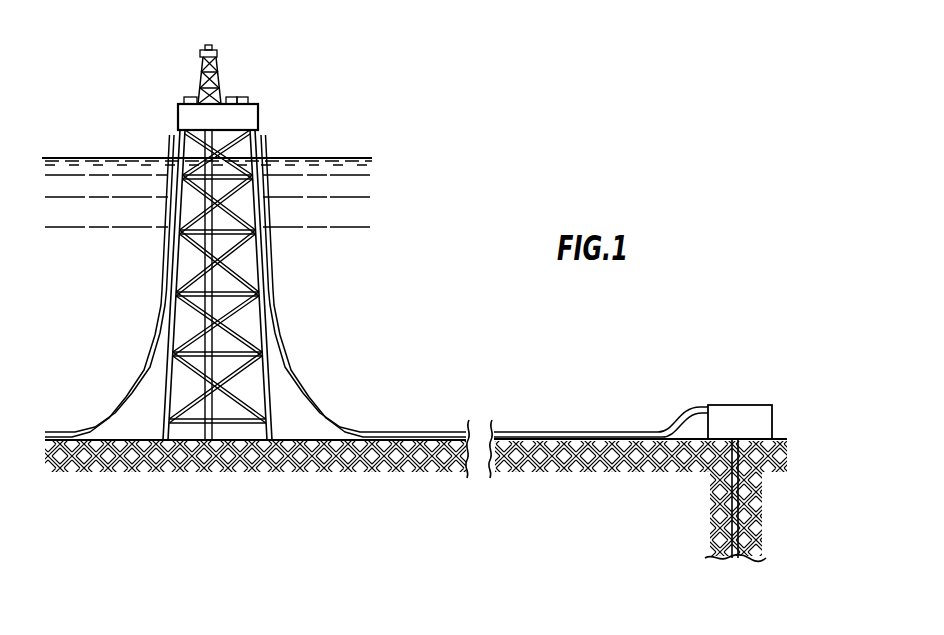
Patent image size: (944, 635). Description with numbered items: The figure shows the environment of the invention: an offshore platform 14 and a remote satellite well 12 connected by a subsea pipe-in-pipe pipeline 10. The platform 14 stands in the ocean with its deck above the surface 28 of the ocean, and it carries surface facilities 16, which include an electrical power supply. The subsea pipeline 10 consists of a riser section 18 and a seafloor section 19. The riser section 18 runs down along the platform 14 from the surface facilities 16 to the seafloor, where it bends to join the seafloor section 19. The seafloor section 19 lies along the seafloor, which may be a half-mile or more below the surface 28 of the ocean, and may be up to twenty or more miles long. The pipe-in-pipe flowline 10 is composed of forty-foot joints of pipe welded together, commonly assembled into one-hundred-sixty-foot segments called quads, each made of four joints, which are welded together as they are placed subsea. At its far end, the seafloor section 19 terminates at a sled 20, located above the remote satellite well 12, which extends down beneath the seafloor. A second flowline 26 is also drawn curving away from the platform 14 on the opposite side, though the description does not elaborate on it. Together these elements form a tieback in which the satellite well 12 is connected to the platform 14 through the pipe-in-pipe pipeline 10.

The subsea pipe-in-pipe pipeline 10 is at (322, 361).
The remote satellite well 12 is at (732, 522).
The platform 14 is at (268, 115).
The surface facilities 16 is at (253, 93).
The riser section 18 is at (272, 302).
The seafloor section 19 is at (572, 431).
The sled 20 is at (732, 405).
The flowline 26 is at (120, 440).
The surface of the ocean 28 is at (67, 157).